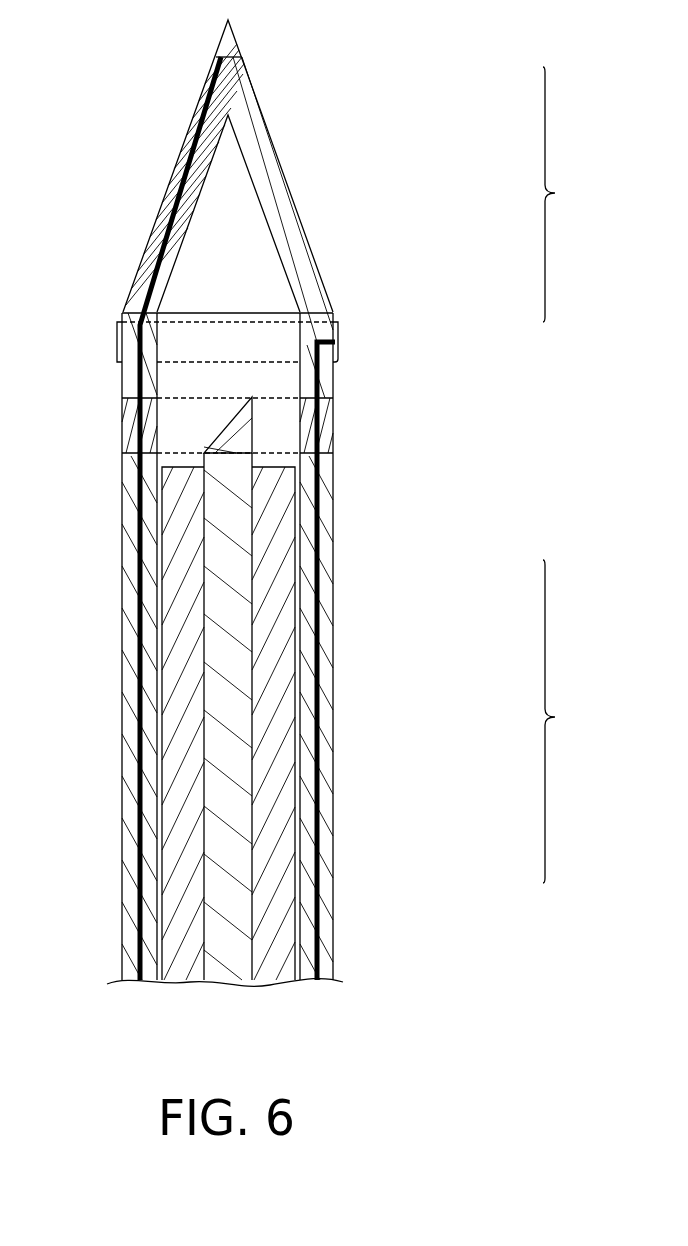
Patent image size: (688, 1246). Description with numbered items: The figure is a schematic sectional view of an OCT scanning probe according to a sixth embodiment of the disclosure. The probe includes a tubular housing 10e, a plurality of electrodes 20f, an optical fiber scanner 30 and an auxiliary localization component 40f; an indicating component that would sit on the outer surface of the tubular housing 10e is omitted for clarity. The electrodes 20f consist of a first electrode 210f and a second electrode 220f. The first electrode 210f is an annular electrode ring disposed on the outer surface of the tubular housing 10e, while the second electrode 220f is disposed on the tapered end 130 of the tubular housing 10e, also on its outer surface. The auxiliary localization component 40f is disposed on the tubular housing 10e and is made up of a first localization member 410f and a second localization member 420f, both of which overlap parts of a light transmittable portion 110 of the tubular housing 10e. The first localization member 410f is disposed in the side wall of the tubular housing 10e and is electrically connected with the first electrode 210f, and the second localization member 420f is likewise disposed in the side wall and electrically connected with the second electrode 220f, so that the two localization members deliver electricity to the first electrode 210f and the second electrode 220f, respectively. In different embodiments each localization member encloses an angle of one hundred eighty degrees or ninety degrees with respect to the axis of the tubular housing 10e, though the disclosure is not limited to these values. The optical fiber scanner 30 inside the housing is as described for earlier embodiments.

The tubular housing 10e is at (343, 383).
The electrodes 20f is at (567, 194).
The second electrode 220f is at (228, 43).
The first electrode 210f is at (338, 333).
The tapered end 130 is at (242, 57).
The light transmittable portion 110 is at (333, 430).
The optical fiber scanner 30 is at (203, 446).
The auxiliary localization component 40f is at (567, 721).
The first localization member 410f is at (320, 545).
The second localization member 420f is at (140, 842).